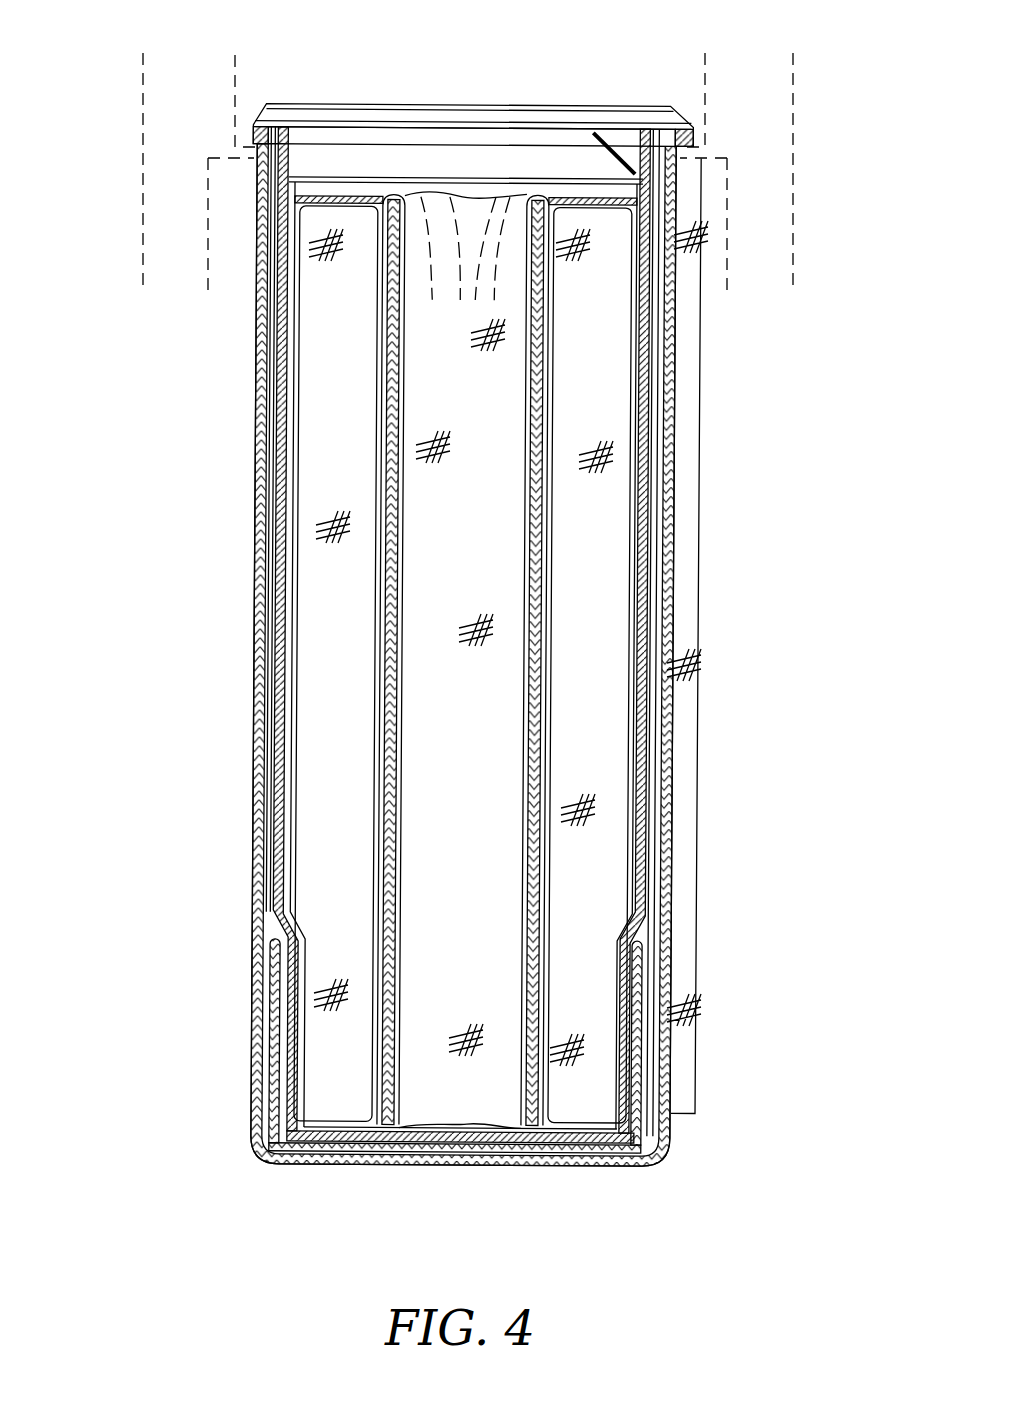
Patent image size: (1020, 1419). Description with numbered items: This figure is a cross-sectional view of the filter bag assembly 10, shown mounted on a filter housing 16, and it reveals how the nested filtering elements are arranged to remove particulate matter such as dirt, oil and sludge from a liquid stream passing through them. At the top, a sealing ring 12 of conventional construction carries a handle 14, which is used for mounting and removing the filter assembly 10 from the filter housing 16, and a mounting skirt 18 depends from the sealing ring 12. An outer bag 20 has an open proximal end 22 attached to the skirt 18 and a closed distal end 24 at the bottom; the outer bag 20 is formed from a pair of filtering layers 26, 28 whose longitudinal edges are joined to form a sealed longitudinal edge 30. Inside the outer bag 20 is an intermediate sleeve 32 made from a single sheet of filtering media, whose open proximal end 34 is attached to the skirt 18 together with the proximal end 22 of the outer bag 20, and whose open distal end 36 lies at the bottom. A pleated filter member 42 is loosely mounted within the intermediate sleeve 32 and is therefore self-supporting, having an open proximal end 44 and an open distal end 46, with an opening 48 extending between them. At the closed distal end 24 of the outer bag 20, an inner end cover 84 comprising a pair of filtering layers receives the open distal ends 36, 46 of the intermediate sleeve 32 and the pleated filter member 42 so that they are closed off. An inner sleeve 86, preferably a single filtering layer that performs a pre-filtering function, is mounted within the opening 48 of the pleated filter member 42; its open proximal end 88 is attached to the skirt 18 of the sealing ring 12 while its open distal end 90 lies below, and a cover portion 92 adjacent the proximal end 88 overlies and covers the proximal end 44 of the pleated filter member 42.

The filter bag assembly 10 is at (543, 93).
The sealing ring 12 is at (256, 122).
The handle 14 is at (612, 170).
The filter housing 16 is at (803, 72).
The mounting skirt 18 is at (316, 160).
The outer bag 20 is at (690, 753).
The open proximal end 22 is at (260, 176).
The closed distal end 24 is at (279, 1163).
The filtering layer 26 is at (668, 880).
The filtering layer 28 is at (660, 908).
The sealed longitudinal edge 30 is at (687, 378).
The intermediate sleeve 32 is at (663, 560).
The open proximal end 34 is at (262, 186).
The open distal end 36 is at (630, 1073).
The pleated filter member 42 is at (300, 786).
The open proximal end 44 is at (362, 215).
The open distal end 46 is at (362, 1110).
The opening 48 is at (388, 380).
The inner end cover 84 is at (478, 1132).
The inner sleeve 86 is at (536, 560).
The open proximal end 88 is at (292, 178).
The open distal end 90 is at (423, 1086).
The cover portion 92 is at (562, 188).